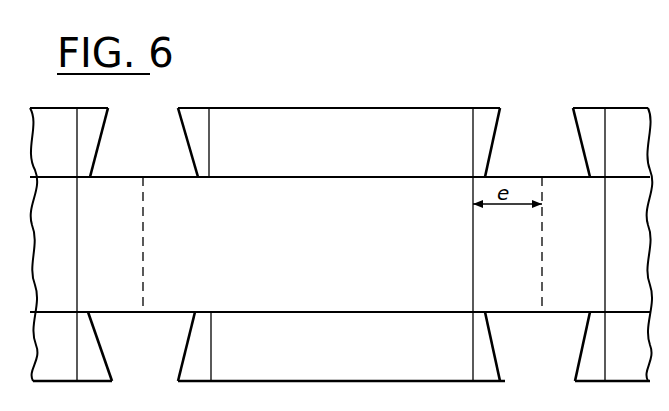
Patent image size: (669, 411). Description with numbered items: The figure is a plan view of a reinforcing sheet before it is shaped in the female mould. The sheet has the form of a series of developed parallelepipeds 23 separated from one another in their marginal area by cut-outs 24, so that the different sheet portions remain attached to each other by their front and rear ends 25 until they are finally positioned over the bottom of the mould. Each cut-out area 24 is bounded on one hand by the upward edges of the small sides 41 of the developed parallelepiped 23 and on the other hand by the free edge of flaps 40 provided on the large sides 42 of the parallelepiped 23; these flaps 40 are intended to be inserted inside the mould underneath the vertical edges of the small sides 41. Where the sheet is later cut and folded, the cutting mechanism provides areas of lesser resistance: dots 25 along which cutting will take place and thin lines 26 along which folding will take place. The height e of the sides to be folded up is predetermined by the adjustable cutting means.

The developed parallelepiped 23 is at (340, 244).
The cut-out 24 is at (139, 158).
The front and rear ends 25 is at (143, 237).
The thin lines 26 is at (211, 137).
The flap 40 is at (586, 122).
The small side 41 is at (168, 290).
The large side 42 is at (341, 244).